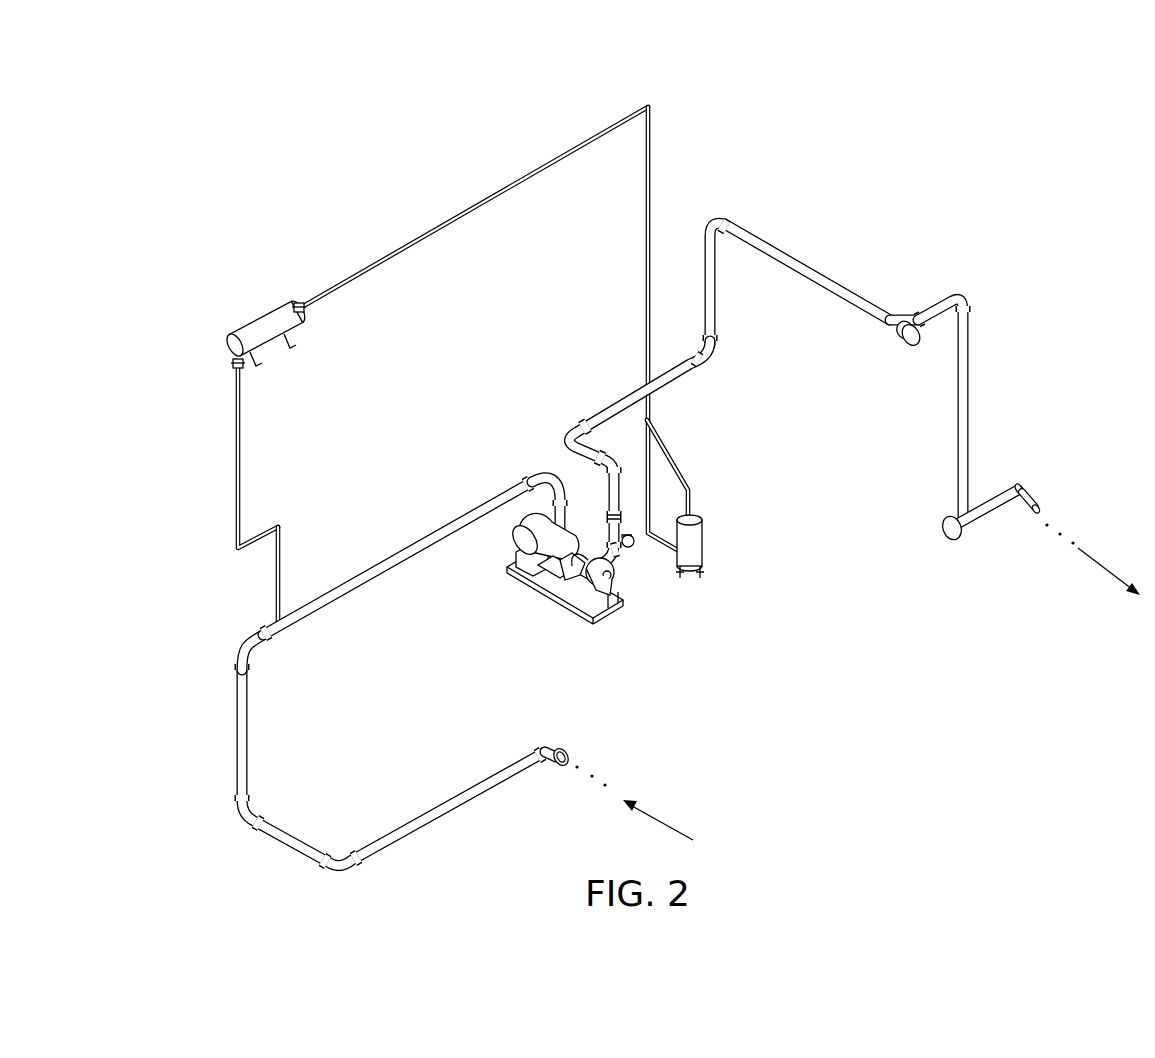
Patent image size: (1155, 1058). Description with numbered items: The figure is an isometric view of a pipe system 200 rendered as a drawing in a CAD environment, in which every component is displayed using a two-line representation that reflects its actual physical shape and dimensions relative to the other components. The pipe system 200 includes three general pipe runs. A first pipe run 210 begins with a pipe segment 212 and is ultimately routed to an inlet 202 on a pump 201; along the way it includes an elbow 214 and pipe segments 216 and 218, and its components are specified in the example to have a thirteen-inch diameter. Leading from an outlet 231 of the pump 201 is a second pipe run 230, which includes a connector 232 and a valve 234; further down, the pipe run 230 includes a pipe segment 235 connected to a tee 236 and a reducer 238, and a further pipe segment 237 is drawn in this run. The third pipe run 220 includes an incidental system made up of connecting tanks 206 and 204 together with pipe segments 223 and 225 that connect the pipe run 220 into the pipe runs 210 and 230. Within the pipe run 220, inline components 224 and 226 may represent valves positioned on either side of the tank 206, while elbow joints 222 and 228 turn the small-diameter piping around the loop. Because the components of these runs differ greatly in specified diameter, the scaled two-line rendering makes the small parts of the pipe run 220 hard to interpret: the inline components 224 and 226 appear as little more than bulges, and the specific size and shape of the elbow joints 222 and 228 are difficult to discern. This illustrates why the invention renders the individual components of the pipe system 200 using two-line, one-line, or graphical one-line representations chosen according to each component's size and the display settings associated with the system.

The pipe system 200 is at (905, 780).
The pump 201 is at (565, 603).
The inlet 202 is at (536, 582).
The tank 204 is at (703, 538).
The tank 206 is at (254, 324).
The first pipe run 210 is at (310, 717).
The pipe segment 212 is at (575, 752).
The elbow 214 is at (240, 647).
The pipe segment 216 is at (305, 622).
The pipe segment 218 is at (525, 483).
The pipe run 220 is at (318, 393).
The elbow joint 222 is at (233, 548).
The pipe segment 223 is at (280, 566).
The inline component 224 is at (233, 367).
The pipe segment 225 is at (655, 442).
The inline component 226 is at (302, 313).
The elbow joint 228 is at (652, 108).
The pipe run 230 is at (904, 421).
The outlet 231 is at (619, 565).
The connector 232 is at (633, 548).
The valve 234 is at (628, 518).
The pipe segment 235 is at (610, 467).
The tee 236 is at (898, 338).
The pipe section 237 is at (806, 268).
The reducer 238 is at (920, 313).